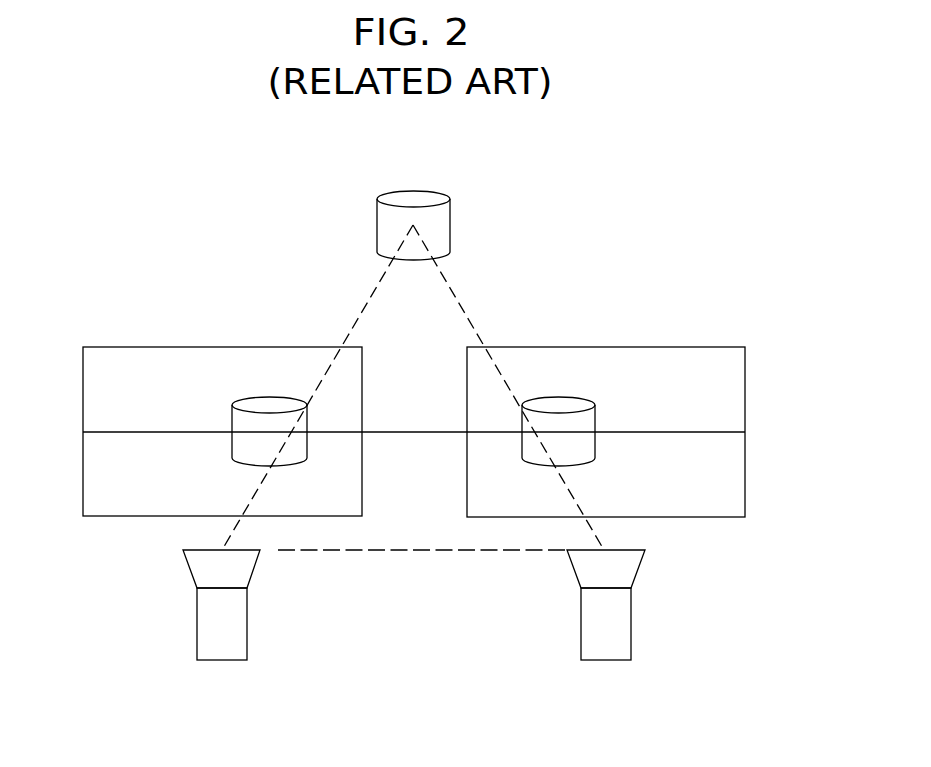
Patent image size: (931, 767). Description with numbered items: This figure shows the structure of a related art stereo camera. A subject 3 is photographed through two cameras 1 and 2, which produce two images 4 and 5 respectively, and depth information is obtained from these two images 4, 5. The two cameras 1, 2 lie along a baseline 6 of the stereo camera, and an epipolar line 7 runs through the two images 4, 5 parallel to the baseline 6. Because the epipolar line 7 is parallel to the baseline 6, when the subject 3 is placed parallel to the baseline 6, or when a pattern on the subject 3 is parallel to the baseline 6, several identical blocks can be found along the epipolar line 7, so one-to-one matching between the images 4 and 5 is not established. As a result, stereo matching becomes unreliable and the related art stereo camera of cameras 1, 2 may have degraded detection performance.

The camera 1 is at (222, 660).
The camera 2 is at (608, 660).
The subject 3 is at (413, 190).
The image 4 is at (175, 347).
The image 5 is at (683, 347).
The baseline 6 is at (413, 553).
The epipolar line 7 is at (714, 432).